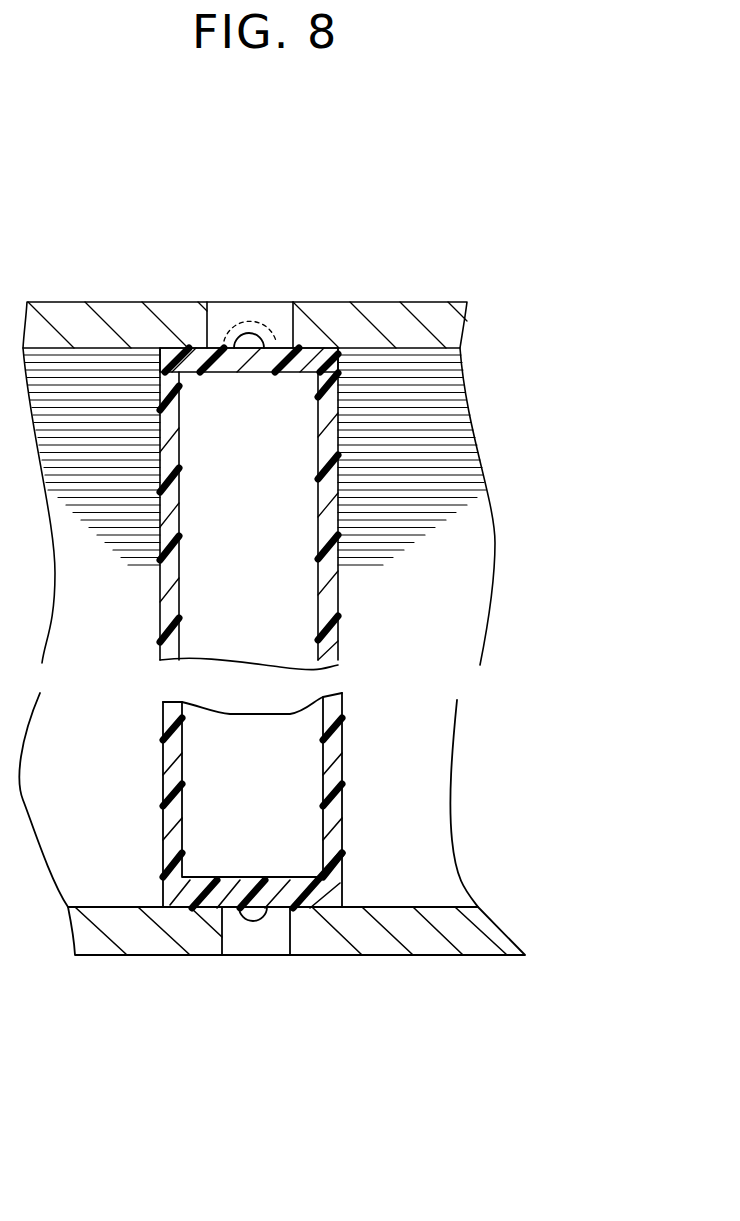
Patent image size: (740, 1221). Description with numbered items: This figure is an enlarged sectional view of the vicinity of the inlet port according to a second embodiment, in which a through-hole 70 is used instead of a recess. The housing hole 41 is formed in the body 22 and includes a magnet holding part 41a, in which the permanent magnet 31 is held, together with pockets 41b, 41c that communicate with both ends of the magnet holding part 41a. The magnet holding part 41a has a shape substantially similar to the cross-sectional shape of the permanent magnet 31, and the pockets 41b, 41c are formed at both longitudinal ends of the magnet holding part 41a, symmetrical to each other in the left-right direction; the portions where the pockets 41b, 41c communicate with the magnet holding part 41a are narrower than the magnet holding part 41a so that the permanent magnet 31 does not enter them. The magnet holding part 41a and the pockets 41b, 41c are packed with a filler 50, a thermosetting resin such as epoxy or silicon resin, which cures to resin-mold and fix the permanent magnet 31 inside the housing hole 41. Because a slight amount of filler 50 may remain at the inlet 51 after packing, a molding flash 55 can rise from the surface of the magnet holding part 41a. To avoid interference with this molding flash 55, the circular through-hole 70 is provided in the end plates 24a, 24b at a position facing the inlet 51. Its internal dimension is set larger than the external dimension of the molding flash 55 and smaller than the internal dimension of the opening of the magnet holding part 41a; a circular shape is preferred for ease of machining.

The housing body 22 is at (460, 572).
The end plate 24a is at (77, 318).
The end plate 24b is at (122, 958).
The through-hole 70 is at (217, 316).
The molding flash 55 is at (252, 333).
The inlet 51 is at (282, 305).
The filler 50 is at (218, 374).
The housing hole 41 is at (253, 529).
The magnet holding part 41a is at (249, 400).
The pocket 41b is at (337, 600).
The pocket 41c is at (168, 604).
The permanent magnet 31 is at (250, 645).